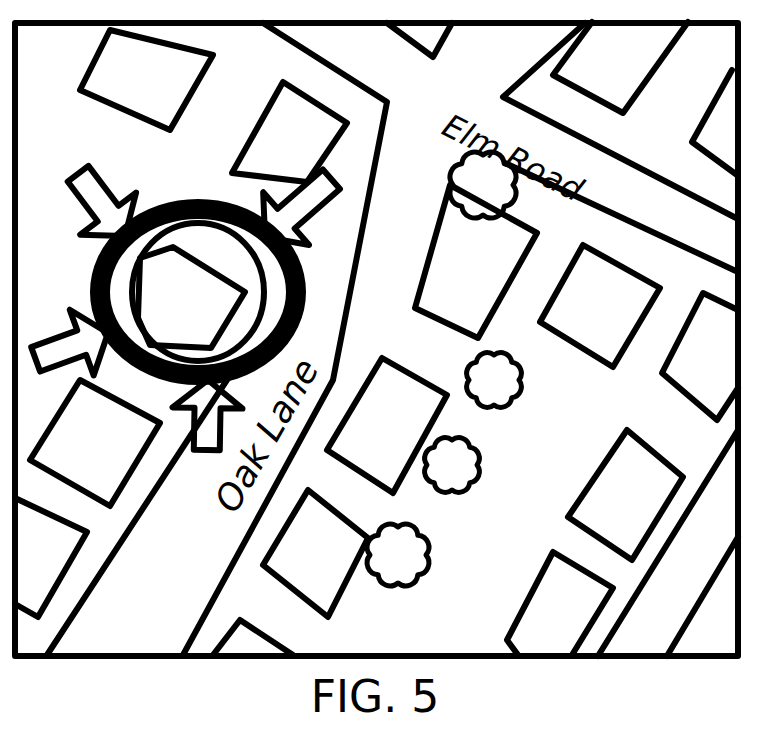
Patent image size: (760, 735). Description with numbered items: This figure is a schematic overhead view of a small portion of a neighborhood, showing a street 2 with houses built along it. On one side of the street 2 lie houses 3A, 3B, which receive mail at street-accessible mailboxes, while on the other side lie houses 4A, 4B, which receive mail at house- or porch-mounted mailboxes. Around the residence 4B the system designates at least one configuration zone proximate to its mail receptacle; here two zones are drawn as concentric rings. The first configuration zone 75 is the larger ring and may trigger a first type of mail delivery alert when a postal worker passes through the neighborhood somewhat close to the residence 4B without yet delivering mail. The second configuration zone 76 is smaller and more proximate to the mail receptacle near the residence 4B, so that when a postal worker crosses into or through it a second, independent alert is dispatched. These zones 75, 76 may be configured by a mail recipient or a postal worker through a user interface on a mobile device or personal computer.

The street 2 is at (376, 339).
The house 3A is at (476, 261).
The house 3B is at (387, 425).
The house 4A is at (289, 132).
The house 4B is at (191, 297).
The first configuration zone 75 is at (192, 199).
The second configuration zone 76 is at (166, 226).